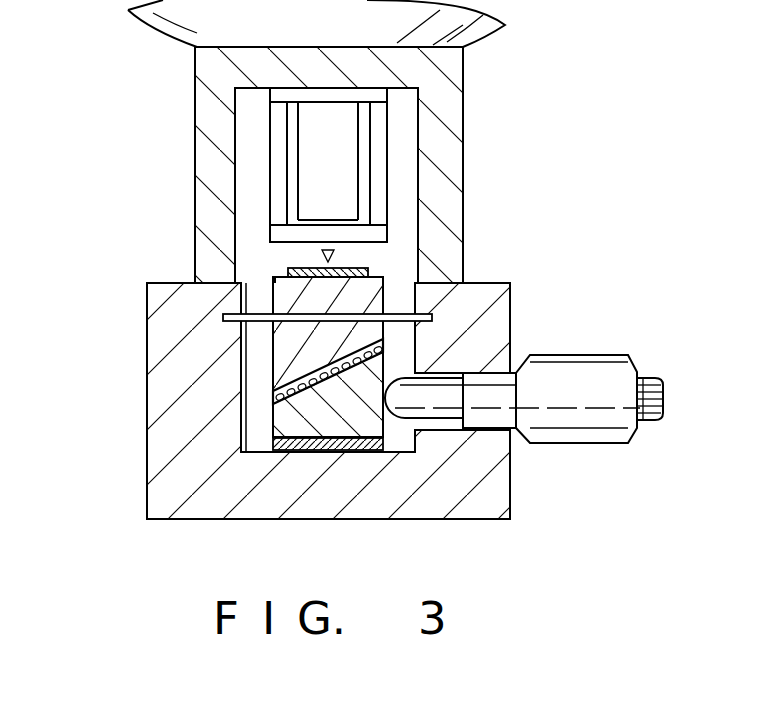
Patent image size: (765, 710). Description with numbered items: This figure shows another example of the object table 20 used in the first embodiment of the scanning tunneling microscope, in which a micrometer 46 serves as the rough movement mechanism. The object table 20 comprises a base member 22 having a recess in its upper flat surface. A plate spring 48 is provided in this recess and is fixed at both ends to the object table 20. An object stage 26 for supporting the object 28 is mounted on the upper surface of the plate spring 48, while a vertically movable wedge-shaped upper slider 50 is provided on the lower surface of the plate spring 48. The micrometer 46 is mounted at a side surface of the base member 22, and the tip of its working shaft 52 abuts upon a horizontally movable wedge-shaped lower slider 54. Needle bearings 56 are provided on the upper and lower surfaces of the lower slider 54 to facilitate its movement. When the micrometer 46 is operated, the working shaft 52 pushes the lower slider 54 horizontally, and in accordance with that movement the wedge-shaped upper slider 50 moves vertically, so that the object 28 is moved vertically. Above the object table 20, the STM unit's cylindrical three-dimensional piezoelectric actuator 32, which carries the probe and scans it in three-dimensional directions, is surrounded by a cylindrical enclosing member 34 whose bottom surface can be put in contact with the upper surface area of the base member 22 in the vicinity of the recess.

The object table 20 is at (147, 316).
The base member 22 is at (482, 282).
The object stage 26 is at (277, 277).
The object 28 is at (367, 268).
The cylindrical three-dimensional piezoelectric actuator 32 is at (268, 165).
The cylindrical enclosing member 34 is at (458, 106).
The micrometer 46 is at (589, 356).
The plate spring 48 is at (241, 345).
The wedge-shaped upper slider 50 is at (273, 372).
The tube 52 is at (447, 427).
The wedge-shaped lower slider 54 is at (273, 446).
The needle bearings 56 is at (273, 399).